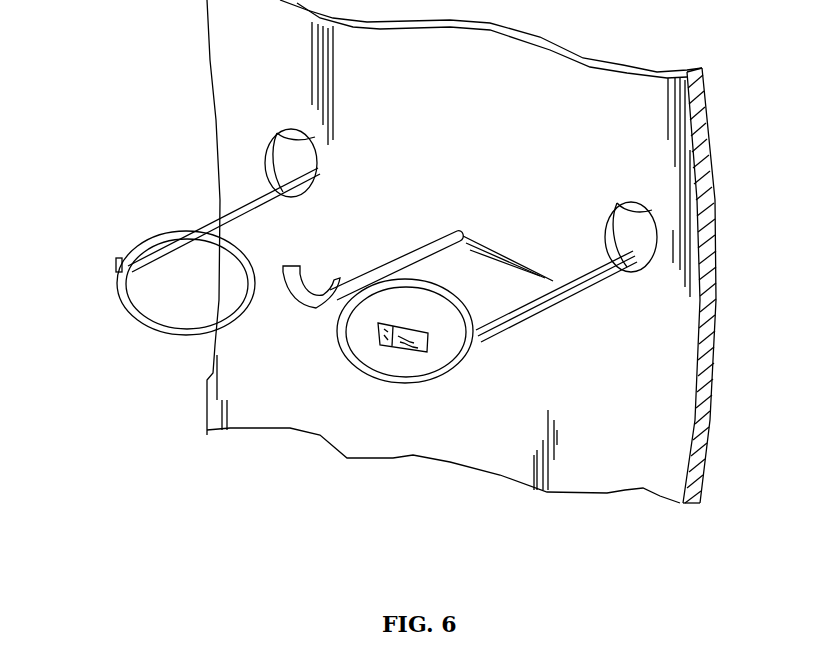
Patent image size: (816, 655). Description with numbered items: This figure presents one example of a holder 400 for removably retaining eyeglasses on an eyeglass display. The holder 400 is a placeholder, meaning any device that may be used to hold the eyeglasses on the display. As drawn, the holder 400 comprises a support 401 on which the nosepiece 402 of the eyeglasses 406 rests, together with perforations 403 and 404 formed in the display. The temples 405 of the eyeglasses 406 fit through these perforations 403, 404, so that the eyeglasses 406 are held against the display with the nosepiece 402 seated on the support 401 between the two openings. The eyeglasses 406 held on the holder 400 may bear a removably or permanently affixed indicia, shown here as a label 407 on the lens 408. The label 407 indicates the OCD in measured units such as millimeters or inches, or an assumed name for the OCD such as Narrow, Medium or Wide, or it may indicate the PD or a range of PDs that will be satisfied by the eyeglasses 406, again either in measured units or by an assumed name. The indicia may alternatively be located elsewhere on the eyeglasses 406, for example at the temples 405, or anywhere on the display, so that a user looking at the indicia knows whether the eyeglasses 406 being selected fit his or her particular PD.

The holder 400 is at (384, 251).
The support 401 is at (441, 205).
The nosepiece 402 is at (331, 243).
The perforation 403 is at (615, 205).
The perforation 404 is at (275, 133).
The temples 405 is at (386, 258).
The eyeglasses 406 is at (141, 283).
The label 407 is at (451, 334).
The lens 408 is at (422, 379).